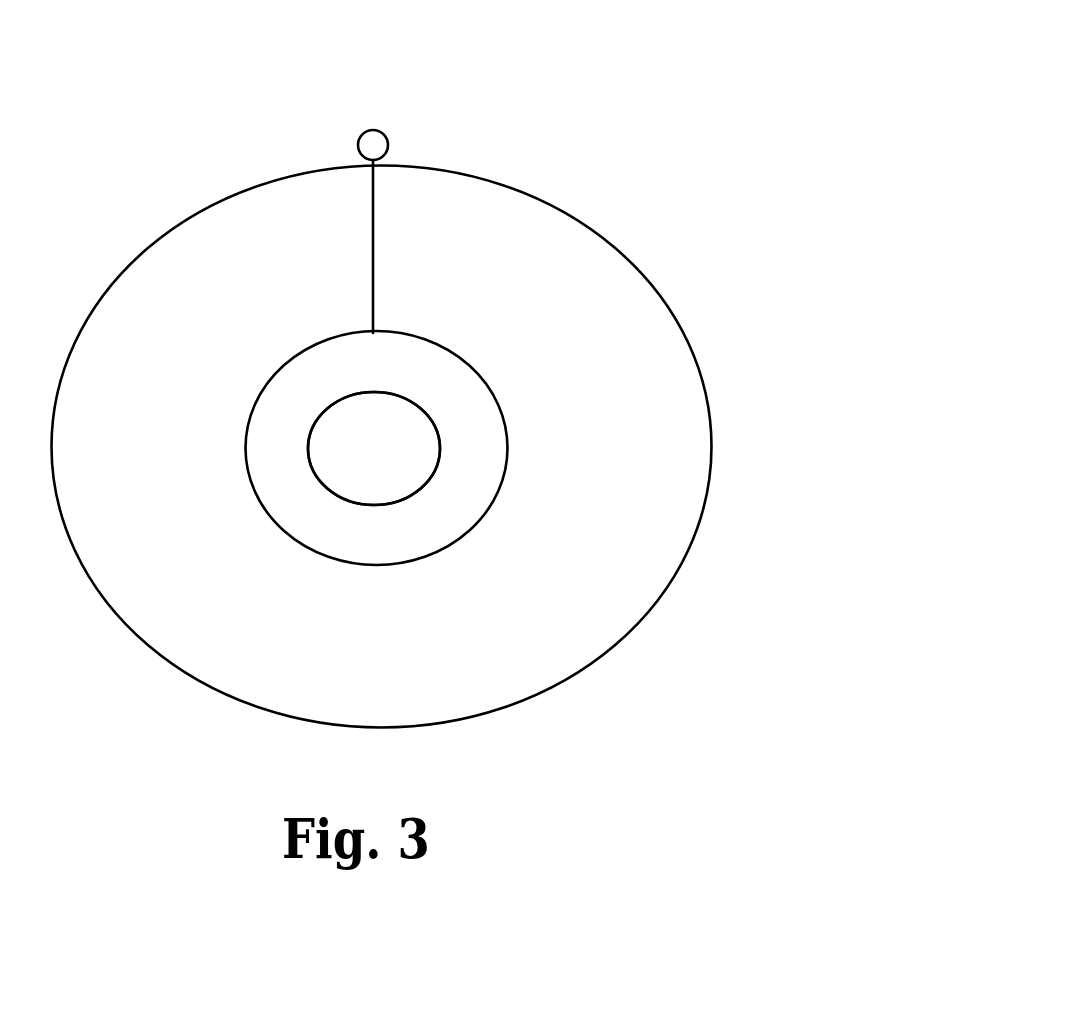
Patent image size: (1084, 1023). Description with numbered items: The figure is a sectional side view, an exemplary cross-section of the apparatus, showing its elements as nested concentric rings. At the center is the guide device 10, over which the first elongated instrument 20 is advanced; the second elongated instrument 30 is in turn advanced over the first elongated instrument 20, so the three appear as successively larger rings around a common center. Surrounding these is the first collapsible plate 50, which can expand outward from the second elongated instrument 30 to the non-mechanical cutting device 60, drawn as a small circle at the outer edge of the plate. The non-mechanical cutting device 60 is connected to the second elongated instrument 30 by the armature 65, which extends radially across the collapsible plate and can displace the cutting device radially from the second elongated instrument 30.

The guide device 10 is at (372, 458).
The first elongated instrument 20 is at (433, 420).
The second elongated instrument 30 is at (470, 360).
The first collapsible plate 50 is at (573, 626).
The non-mechanical cutting device 60 is at (390, 142).
The armature 65 is at (380, 263).